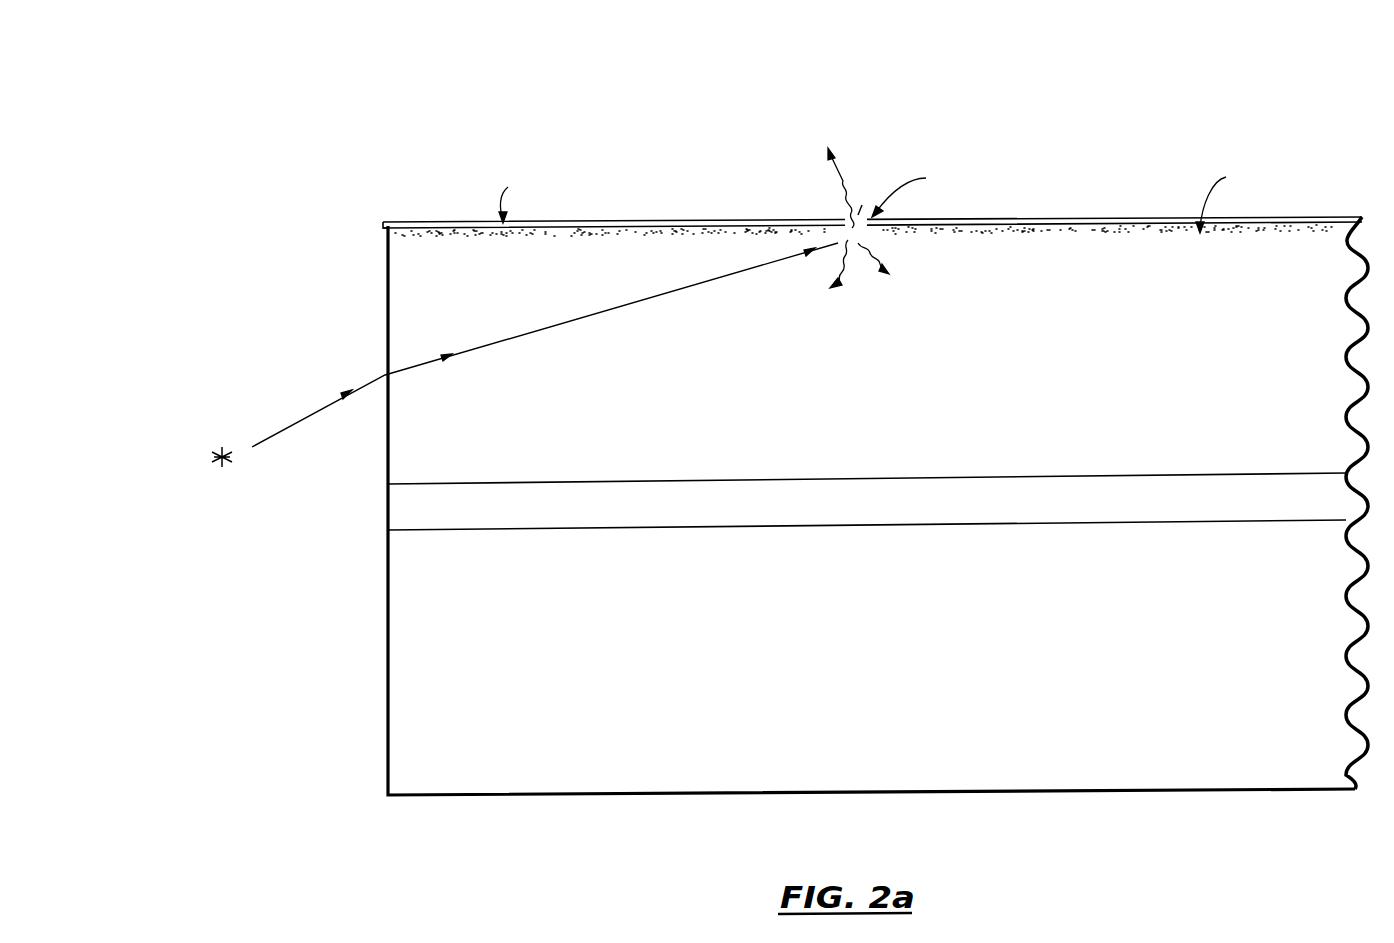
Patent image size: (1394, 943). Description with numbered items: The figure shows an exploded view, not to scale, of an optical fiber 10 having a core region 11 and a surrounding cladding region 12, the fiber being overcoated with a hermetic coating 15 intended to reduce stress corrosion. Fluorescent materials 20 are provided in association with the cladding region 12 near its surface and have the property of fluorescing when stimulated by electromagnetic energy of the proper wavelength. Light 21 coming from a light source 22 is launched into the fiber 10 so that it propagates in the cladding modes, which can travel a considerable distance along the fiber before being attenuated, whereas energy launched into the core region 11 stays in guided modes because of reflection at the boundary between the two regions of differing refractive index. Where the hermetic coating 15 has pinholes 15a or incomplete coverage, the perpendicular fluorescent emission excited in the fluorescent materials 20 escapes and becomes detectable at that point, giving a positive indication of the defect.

The optical fiber 10 is at (658, 114).
The core region 11 is at (606, 516).
The cladding region 12 is at (892, 630).
The hermetic coating 15 is at (458, 221).
The pinholes 15a is at (863, 213).
The fluorescent materials 20 is at (420, 232).
The light 21 is at (310, 421).
The light source 22 is at (207, 458).